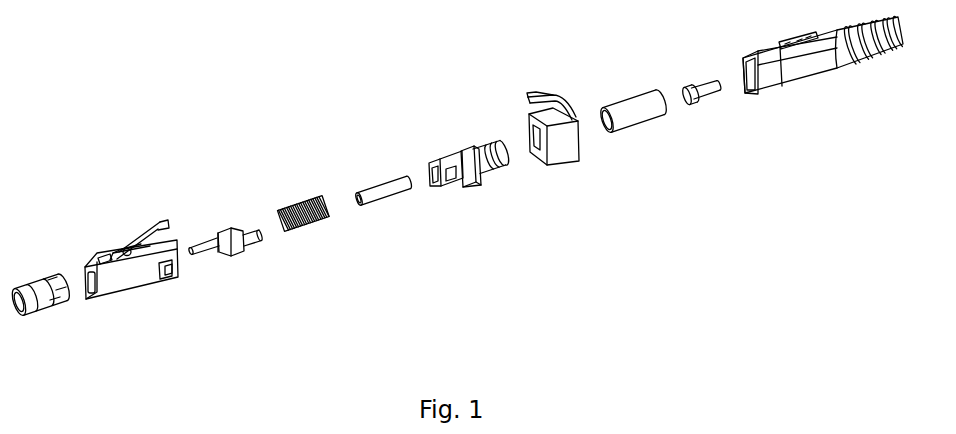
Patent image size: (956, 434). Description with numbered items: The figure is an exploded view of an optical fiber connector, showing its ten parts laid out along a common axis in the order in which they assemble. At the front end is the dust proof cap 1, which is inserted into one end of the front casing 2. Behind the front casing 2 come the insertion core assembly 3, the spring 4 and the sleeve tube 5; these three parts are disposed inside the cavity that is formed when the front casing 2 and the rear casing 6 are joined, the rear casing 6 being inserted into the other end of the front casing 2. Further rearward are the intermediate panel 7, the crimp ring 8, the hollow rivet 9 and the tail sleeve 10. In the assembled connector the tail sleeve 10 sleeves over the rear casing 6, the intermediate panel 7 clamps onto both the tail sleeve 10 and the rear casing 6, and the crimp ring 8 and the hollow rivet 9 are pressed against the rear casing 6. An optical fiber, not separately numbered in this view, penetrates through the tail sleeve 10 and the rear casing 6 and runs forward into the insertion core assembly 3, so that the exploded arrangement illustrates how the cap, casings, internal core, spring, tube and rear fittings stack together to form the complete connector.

The dust proof cap 1 is at (40, 313).
The front casing 2 is at (139, 288).
The insertion core assembly 3 is at (238, 251).
The spring 4 is at (307, 223).
The sleeve tube 5 is at (387, 201).
The rear casing 6 is at (475, 188).
The intermediate panel 7 is at (563, 163).
The crimp ring 8 is at (640, 130).
The hollow rivet 9 is at (705, 101).
The tail sleeve 10 is at (806, 87).